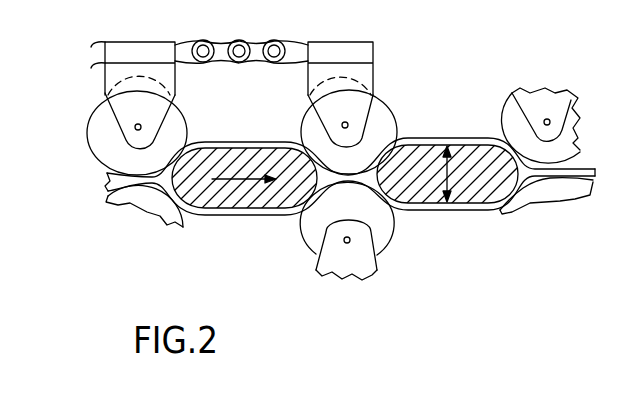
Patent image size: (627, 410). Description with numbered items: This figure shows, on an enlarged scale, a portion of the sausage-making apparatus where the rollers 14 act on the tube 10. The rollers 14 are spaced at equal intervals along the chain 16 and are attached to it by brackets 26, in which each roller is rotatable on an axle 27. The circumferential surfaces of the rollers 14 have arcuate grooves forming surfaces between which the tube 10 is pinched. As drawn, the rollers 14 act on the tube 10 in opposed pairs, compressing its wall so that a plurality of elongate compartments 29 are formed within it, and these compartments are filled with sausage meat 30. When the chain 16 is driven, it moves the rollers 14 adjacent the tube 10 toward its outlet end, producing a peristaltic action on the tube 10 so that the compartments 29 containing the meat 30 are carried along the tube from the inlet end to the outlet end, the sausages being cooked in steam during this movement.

The tube 10 is at (107, 174).
The rollers 14 is at (96, 122).
The chain 16 is at (218, 46).
The brackets 26 is at (112, 98).
The axles 27 is at (141, 126).
The elongate compartments 29 is at (238, 200).
The sausage meat 30 is at (470, 181).